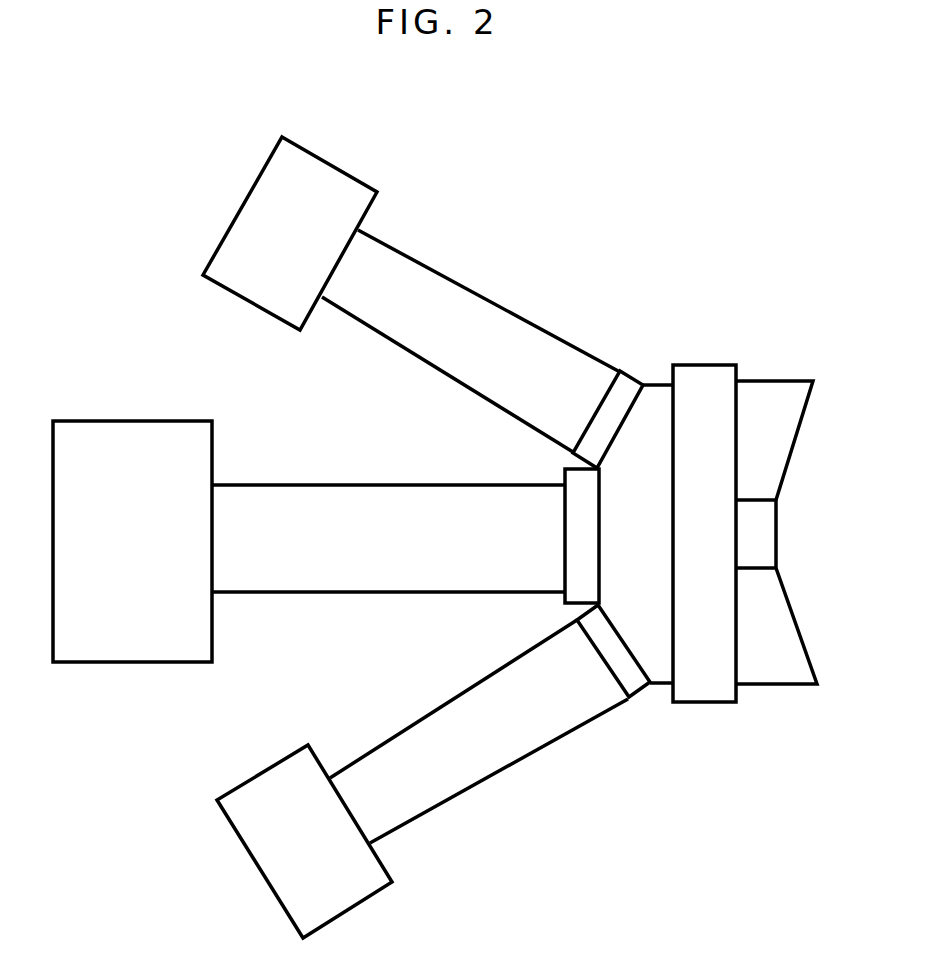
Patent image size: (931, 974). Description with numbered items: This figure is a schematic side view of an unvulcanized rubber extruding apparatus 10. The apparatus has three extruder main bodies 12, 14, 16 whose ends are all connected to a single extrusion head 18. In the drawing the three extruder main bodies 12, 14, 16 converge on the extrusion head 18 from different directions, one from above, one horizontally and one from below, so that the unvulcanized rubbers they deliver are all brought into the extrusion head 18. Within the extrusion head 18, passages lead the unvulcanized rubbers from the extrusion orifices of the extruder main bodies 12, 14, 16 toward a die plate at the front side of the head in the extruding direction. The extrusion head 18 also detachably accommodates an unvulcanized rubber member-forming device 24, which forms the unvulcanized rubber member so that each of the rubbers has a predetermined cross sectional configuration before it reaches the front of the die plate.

The unvulcanized rubber extruding apparatus 10 is at (570, 168).
The extruder main body 12 is at (359, 181).
The extruder main body 14 is at (192, 421).
The extruder main body 16 is at (290, 752).
The extrusion head 18 is at (710, 365).
The unvulcanized rubber member-forming device 24 is at (777, 527).